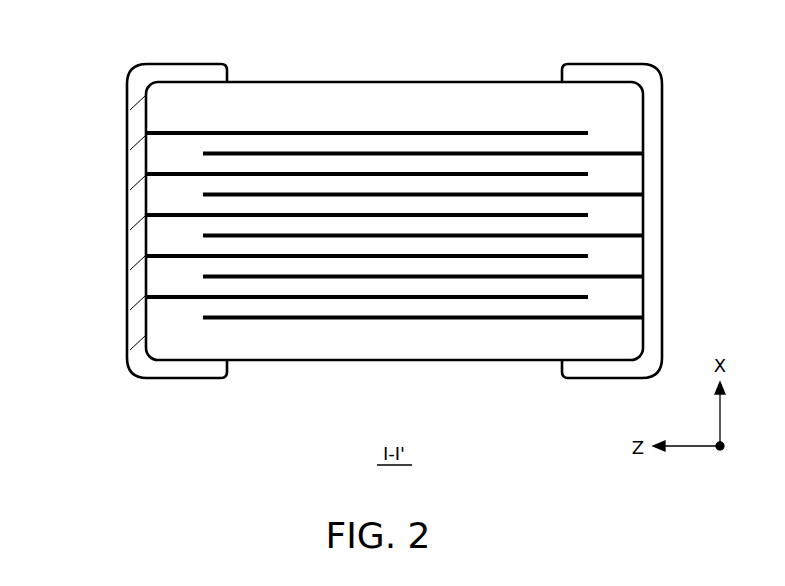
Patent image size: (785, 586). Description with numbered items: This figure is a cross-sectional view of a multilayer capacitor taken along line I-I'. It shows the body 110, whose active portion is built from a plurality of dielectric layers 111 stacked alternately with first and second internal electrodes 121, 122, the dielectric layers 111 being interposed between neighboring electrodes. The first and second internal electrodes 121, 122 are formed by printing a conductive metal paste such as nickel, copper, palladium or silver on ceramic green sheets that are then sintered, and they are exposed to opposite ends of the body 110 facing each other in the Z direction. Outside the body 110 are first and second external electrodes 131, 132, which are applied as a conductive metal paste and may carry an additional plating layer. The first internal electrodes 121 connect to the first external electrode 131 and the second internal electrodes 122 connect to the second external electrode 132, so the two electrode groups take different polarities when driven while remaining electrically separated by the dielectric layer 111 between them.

The body 110 is at (318, 82).
The dielectric layer 111 is at (205, 162).
The first internal electrode 121 is at (378, 131).
The second internal electrode 122 is at (436, 152).
The first external electrode 131 is at (182, 76).
The second external electrode 132 is at (607, 74).